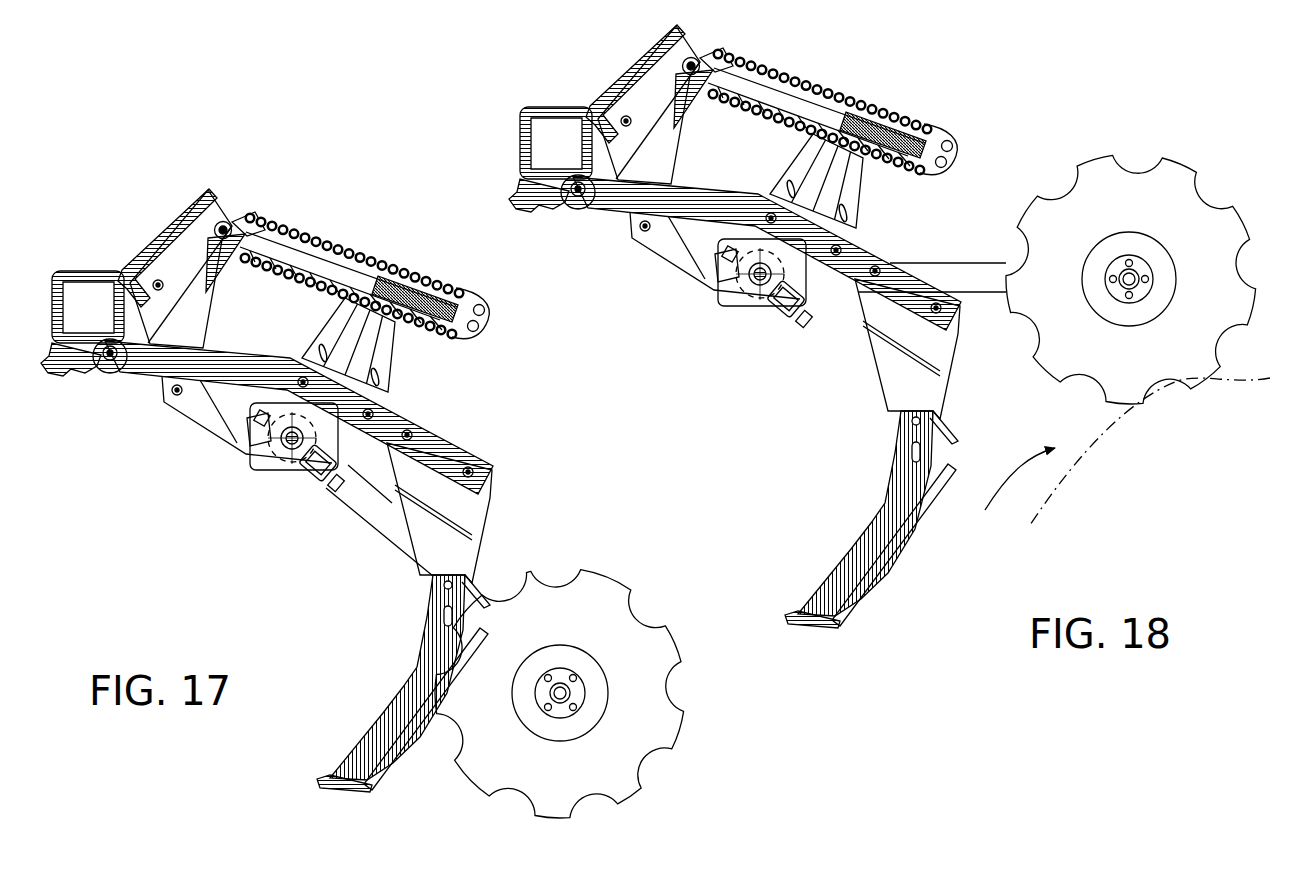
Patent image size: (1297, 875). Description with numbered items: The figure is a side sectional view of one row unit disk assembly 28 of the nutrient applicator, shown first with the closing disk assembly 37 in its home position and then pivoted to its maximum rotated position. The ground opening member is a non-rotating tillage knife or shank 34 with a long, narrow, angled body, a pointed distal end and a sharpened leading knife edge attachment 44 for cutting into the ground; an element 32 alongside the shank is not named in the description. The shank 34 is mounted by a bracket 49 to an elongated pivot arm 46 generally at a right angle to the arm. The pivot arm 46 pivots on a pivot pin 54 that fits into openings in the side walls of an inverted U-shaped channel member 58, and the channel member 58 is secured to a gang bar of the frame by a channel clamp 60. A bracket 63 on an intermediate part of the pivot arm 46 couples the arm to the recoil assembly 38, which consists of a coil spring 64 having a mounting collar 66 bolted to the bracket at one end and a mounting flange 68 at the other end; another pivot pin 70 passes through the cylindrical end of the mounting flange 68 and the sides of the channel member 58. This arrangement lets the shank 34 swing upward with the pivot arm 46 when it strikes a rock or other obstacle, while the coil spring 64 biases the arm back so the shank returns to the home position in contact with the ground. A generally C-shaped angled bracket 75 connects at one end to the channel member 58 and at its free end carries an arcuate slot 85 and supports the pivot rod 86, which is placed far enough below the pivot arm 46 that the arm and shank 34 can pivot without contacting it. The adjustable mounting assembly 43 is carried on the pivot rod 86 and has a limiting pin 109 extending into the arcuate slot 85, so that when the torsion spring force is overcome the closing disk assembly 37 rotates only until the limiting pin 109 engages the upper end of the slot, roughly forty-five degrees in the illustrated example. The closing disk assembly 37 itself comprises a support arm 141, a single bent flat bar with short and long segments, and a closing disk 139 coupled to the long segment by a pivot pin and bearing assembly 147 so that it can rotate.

In FIG. 17, the row unit disk assembly 28 is at (345, 133).
In FIG. 18, the row unit disk assembly 28 is at (1012, 42).
In FIG. 17, the blade 32 is at (407, 745).
In FIG. 18, the blade 32 is at (894, 545).
In FIG. 17, the shank 34 is at (420, 687).
In FIG. 18, the shank 34 is at (865, 513).
In FIG. 17, the closing disk assembly 37 is at (355, 525).
In FIG. 18, the closing disk assembly 37 is at (985, 193).
In FIG. 17, the recoil assembly 38 is at (322, 213).
In FIG. 18, the recoil assembly 38 is at (869, 43).
In FIG. 17, the adjustable mounting assembly 43 is at (327, 445).
In FIG. 18, the adjustable mounting assembly 43 is at (800, 327).
In FIG. 17, the knife edge attachment 44 is at (330, 778).
In FIG. 18, the knife edge attachment 44 is at (826, 639).
In FIG. 17, the pivot arm 46 is at (243, 362).
In FIG. 18, the pivot arm 46 is at (761, 244).
In FIG. 17, the bracket 49 is at (460, 507).
In FIG. 18, the bracket 49 is at (891, 361).
In FIG. 17, the pivot pin 54 is at (110, 366).
In FIG. 18, the pivot pin 54 is at (577, 217).
In FIG. 17, the channel member 58 is at (167, 236).
In FIG. 18, the channel member 58 is at (643, 102).
In FIG. 17, the channel clamp 60 is at (90, 272).
In FIG. 18, the channel clamp 60 is at (550, 135).
In FIG. 17, the bracket 63 is at (380, 350).
In FIG. 18, the bracket 63 is at (845, 181).
In FIG. 17, the coil spring 64 is at (350, 250).
In FIG. 18, the coil spring 64 is at (830, 112).
In FIG. 17, the mounting collar 66 is at (453, 283).
In FIG. 18, the mounting collar 66 is at (922, 131).
In FIG. 17, the mounting flange 68 is at (213, 268).
In FIG. 18, the mounting flange 68 is at (704, 107).
In FIG. 17, the pivot pin 70 is at (223, 222).
In FIG. 18, the pivot pin 70 is at (721, 45).
In FIG. 17, the angled bracket 75 is at (213, 410).
In FIG. 18, the angled bracket 75 is at (710, 255).
In FIG. 17, the arcuate slot 85 is at (252, 448).
In FIG. 18, the arcuate slot 85 is at (687, 282).
In FIG. 17, the pivot rod 86 is at (287, 446).
In FIG. 18, the pivot rod 86 is at (760, 302).
In FIG. 17, the limiting pin 109 is at (252, 424).
In FIG. 18, the limiting pin 109 is at (680, 299).
In FIG. 17, the closing disk 139 is at (647, 717).
In FIG. 18, the closing disk 139 is at (1168, 188).
In FIG. 17, the support arm 141 is at (388, 533).
In FIG. 18, the support arm 141 is at (932, 258).
In FIG. 17, the pivot pin and bearing assembly 147 is at (560, 702).
In FIG. 18, the pivot pin and bearing assembly 147 is at (1135, 285).